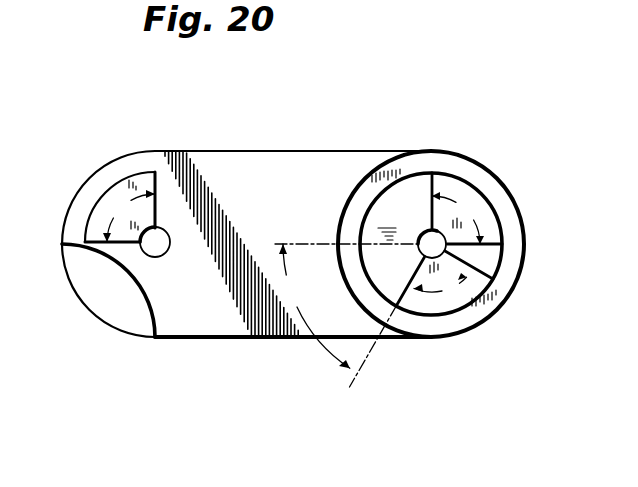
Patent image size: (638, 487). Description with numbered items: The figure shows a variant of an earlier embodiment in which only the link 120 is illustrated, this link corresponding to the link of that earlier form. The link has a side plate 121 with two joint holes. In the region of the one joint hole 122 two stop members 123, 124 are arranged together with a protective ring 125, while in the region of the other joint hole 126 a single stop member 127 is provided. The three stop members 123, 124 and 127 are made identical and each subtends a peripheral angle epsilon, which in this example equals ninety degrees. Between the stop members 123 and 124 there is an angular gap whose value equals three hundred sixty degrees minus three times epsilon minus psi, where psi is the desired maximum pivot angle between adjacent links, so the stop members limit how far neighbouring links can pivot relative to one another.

The link 120 is at (299, 148).
The side plate 121 is at (264, 223).
The joint hole 122 is at (424, 236).
The stop member 123 is at (485, 223).
The stop member 124 is at (463, 297).
The protective ring 125 is at (465, 167).
The joint hole 126 is at (148, 253).
The stop member 127 is at (115, 190).